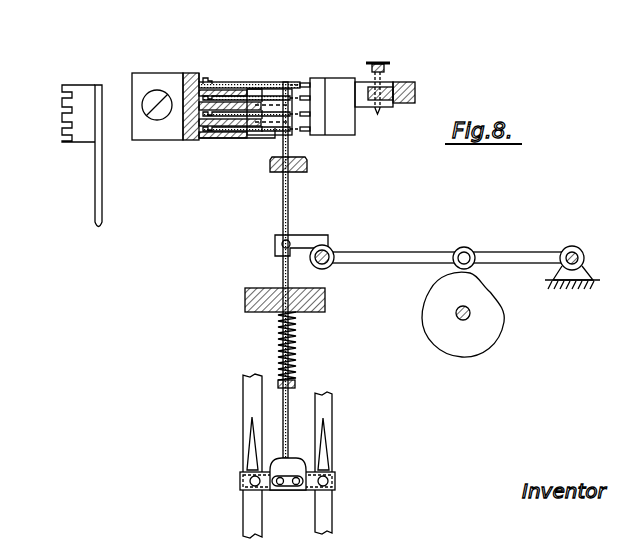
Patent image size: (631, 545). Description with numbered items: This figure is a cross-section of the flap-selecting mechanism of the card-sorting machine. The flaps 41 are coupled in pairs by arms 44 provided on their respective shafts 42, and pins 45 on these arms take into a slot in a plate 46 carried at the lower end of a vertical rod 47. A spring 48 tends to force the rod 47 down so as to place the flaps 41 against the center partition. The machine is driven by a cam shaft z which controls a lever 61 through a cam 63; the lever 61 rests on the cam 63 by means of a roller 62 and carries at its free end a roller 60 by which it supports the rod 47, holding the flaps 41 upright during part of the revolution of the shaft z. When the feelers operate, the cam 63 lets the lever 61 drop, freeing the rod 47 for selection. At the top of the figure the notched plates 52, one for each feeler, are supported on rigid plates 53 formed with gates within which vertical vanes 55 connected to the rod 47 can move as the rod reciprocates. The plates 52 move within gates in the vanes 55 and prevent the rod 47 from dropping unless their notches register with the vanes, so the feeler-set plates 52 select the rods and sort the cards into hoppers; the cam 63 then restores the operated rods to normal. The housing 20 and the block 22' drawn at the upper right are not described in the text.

The housing 20 is at (336, 87).
The adjusting screw block 22' is at (428, 75).
The flaps 41 is at (250, 432).
The shafts 42 is at (336, 482).
The arms 44 is at (312, 478).
The pins 45 is at (285, 488).
The plate 46 is at (283, 462).
The rod 47 is at (97, 203).
The springs 48 is at (312, 242).
The plates 52 is at (231, 80).
The rigid plates 53 is at (207, 79).
The vertical vanes 55 is at (276, 96).
The roller 60 is at (329, 251).
The lever 61 is at (386, 255).
The roller 62 is at (466, 248).
The cam 63 is at (493, 323).
The cam shaft z is at (460, 320).